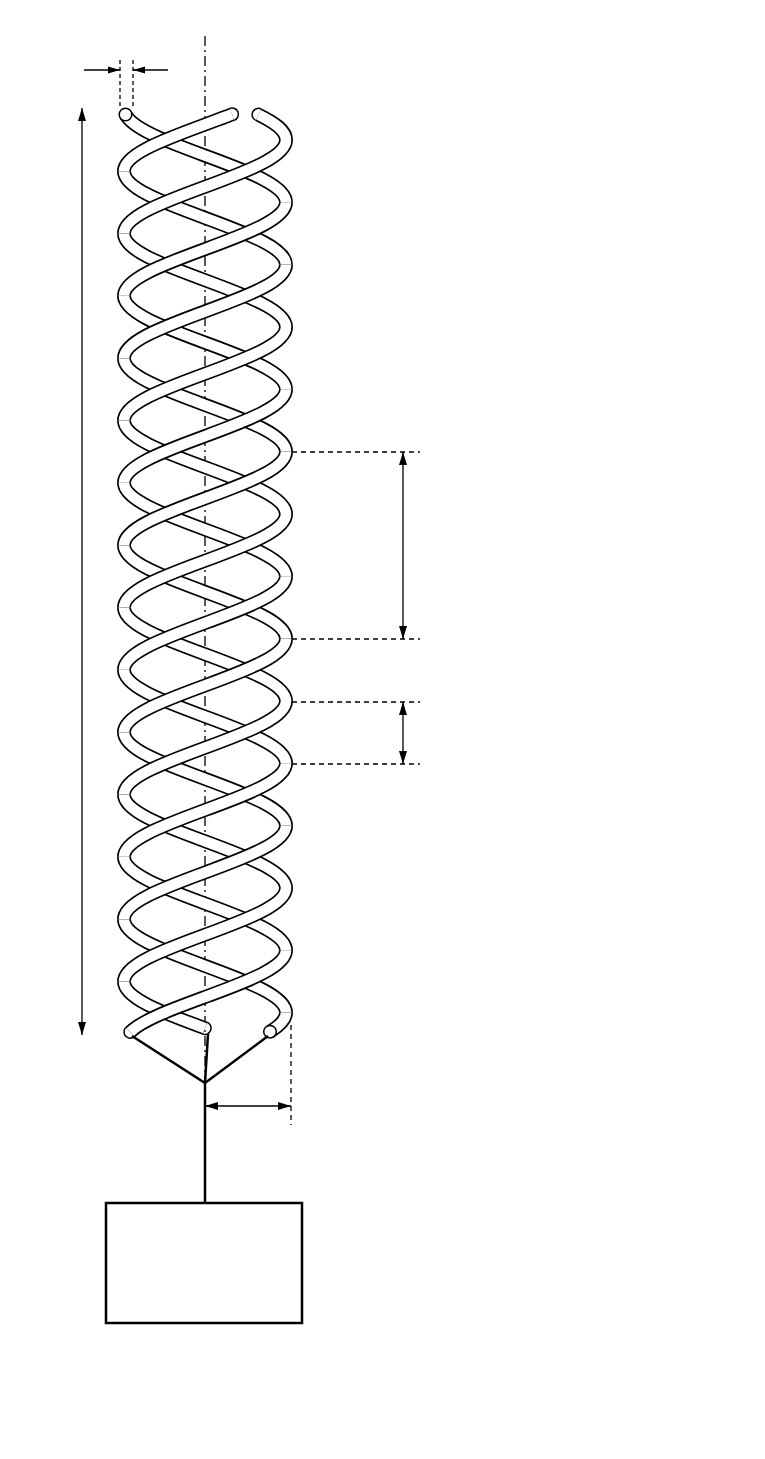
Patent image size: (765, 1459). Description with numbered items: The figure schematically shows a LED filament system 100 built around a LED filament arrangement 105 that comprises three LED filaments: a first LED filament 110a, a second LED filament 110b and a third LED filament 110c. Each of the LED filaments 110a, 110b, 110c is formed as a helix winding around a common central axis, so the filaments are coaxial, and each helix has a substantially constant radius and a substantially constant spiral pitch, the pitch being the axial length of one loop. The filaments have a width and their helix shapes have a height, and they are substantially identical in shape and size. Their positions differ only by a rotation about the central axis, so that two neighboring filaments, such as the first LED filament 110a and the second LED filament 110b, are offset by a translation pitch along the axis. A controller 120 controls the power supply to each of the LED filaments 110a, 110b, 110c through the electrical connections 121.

The LED filament system 100 is at (516, 75).
The LED filament arrangement 105 is at (284, 82).
The first LED filament 110a is at (318, 140).
The second LED filament 110b is at (318, 197).
The third LED filament 110c is at (318, 248).
The controller 120 is at (302, 1256).
The electrical connections 121 is at (204, 1152).